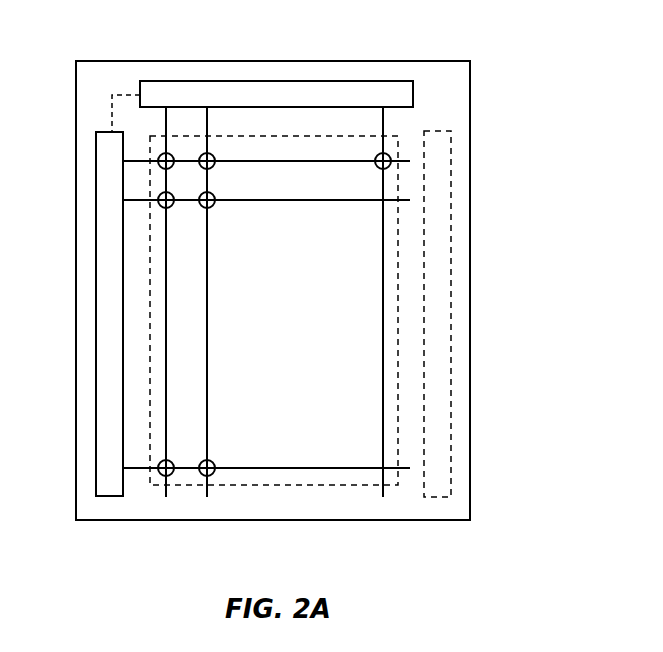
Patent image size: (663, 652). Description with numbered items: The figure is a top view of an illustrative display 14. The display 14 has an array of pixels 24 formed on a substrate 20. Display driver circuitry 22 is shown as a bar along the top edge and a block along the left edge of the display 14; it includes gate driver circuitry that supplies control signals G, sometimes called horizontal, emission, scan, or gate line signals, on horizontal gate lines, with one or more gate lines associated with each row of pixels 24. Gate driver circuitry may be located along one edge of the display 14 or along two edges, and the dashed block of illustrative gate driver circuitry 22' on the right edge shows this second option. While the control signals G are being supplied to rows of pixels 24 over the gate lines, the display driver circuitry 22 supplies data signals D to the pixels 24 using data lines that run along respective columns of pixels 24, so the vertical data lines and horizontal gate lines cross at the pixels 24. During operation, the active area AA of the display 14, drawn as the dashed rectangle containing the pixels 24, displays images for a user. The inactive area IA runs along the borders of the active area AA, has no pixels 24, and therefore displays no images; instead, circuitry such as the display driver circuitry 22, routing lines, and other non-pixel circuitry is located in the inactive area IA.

The display 14 is at (515, 112).
The substrate 20 is at (470, 483).
The display driver circuitry 22 is at (220, 259).
The gate driver circuitry 22' is at (478, 314).
The pixels 24 is at (213, 167).
The data signals D is at (284, 302).
The control signals G is at (266, 305).
The active area AA is at (307, 485).
The inactive area IA is at (328, 72).